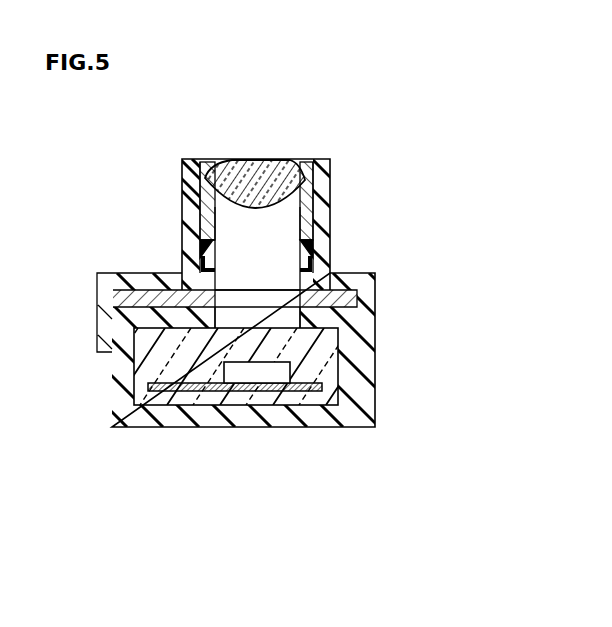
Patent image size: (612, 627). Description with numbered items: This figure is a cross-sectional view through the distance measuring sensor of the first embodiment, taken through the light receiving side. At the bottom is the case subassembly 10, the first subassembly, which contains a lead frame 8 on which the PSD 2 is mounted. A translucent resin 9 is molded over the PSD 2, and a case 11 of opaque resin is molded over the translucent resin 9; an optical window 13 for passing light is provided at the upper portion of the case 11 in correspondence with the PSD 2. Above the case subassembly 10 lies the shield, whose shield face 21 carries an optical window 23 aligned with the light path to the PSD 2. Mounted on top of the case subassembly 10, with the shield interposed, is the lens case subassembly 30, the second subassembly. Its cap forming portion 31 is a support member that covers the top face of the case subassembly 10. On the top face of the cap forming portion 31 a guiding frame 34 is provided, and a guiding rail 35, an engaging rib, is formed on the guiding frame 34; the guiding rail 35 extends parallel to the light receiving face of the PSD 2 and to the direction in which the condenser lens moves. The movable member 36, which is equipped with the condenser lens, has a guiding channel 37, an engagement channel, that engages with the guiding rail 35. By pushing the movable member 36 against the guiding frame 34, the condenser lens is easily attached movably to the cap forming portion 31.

The PSD 2 is at (257, 384).
The lead frame 8 is at (313, 392).
The translucent resin 9 is at (315, 348).
The case subassembly 10 is at (261, 396).
The case 11 is at (152, 415).
The optical window 13 is at (277, 318).
The shield face 21 is at (125, 300).
The optical window 23 is at (277, 298).
The lens case subassembly 30 is at (236, 221).
The cap forming portion 31 is at (102, 338).
The guiding frame 34 is at (200, 263).
The guiding rail 35 is at (198, 254).
The movable member 36 is at (192, 183).
The guiding channel 37 is at (198, 240).